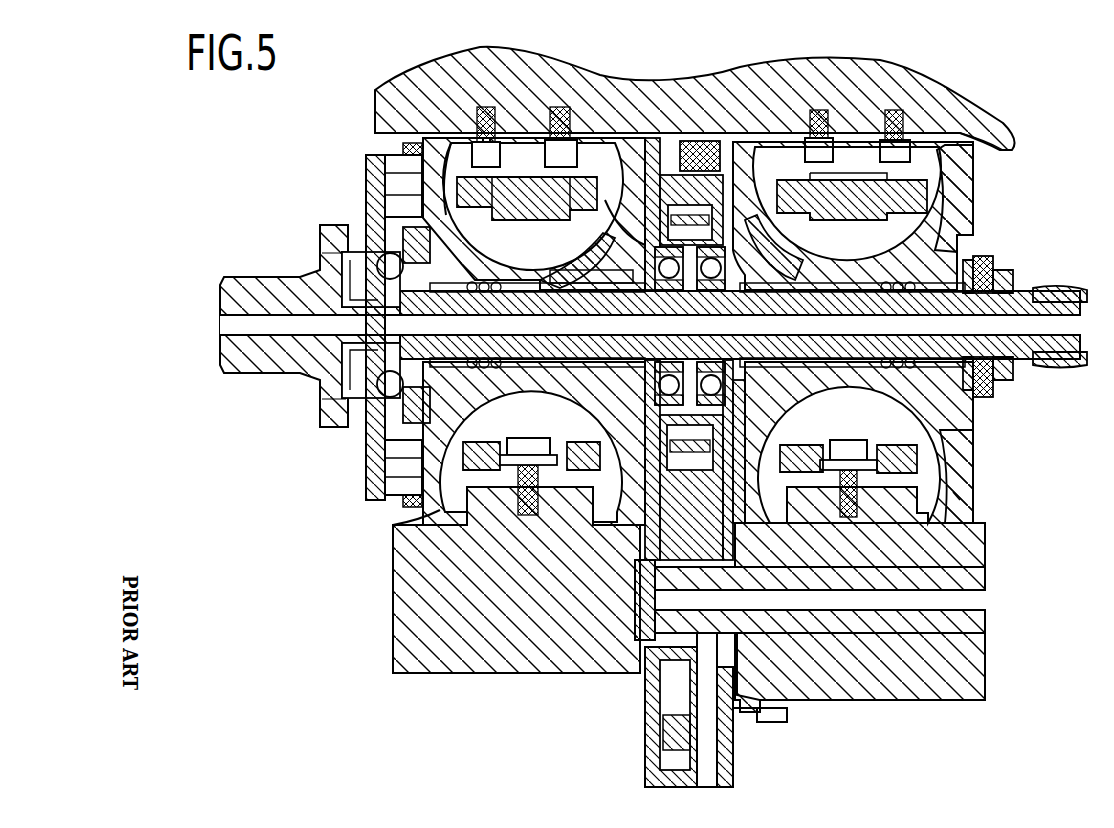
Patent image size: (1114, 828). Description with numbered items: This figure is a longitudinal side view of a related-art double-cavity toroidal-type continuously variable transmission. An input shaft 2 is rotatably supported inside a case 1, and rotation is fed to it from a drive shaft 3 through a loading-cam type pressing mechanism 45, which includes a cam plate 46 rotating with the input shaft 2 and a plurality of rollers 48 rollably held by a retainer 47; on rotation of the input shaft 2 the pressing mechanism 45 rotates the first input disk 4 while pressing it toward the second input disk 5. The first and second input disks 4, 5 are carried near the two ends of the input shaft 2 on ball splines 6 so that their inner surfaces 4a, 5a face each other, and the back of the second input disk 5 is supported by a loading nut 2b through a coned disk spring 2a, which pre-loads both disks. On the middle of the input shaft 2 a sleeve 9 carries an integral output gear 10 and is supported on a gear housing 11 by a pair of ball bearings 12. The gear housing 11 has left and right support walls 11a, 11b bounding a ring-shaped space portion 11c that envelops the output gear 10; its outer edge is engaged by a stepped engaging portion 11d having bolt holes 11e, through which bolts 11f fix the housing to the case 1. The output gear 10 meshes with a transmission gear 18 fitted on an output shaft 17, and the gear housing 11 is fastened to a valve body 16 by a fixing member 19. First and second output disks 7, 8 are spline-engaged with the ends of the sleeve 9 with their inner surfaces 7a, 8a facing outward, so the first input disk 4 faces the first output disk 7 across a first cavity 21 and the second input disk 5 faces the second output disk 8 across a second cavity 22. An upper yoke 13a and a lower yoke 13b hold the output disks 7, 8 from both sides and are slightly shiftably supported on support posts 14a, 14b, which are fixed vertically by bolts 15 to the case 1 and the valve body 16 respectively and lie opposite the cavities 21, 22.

The case 1 is at (952, 100).
The input shaft 2 is at (1020, 292).
The coned disk spring 2a is at (998, 398).
The loading nut 2b is at (998, 388).
The drive shaft 3 is at (258, 350).
The first input disk 4 is at (413, 513).
The inner surface of first input disk 4a is at (420, 518).
The second input disk 5 is at (970, 500).
The inner surface of second input disk 5a is at (980, 440).
The ball spline 6 is at (880, 285).
The first output disk 7 is at (618, 118).
The inner surface of first output disk 7a is at (590, 175).
The second output disk 8 is at (732, 483).
The inner surface of second output disk 8a is at (818, 170).
The sleeve 9 is at (580, 373).
The output gear 10 is at (630, 236).
The gear housing 11 is at (600, 457).
The left support wall 11a is at (605, 250).
The right support wall 11b is at (770, 236).
The ring-shaped space portion 11c is at (603, 430).
The stepped engaging portion 11d is at (712, 180).
The bolt holes 11e is at (700, 140).
The bolts 11f is at (660, 185).
The ball bearings 12 is at (570, 278).
The upper yoke 13a is at (950, 182).
The lower yoke 13b is at (953, 492).
The support post 14a is at (866, 203).
The support post 14b is at (880, 445).
The bolts 15 is at (492, 165).
The valve body 16 is at (960, 540).
The output shaft 17 is at (970, 622).
The transmission gear 18 is at (673, 728).
The fixing member 19 is at (740, 747).
The first cavity 21 is at (466, 168).
The second cavity 22 is at (935, 146).
The pressing mechanism 45 is at (358, 178).
The cam plate 46 is at (378, 492).
The retainer 47 is at (405, 150).
The rollers 48 is at (403, 185).